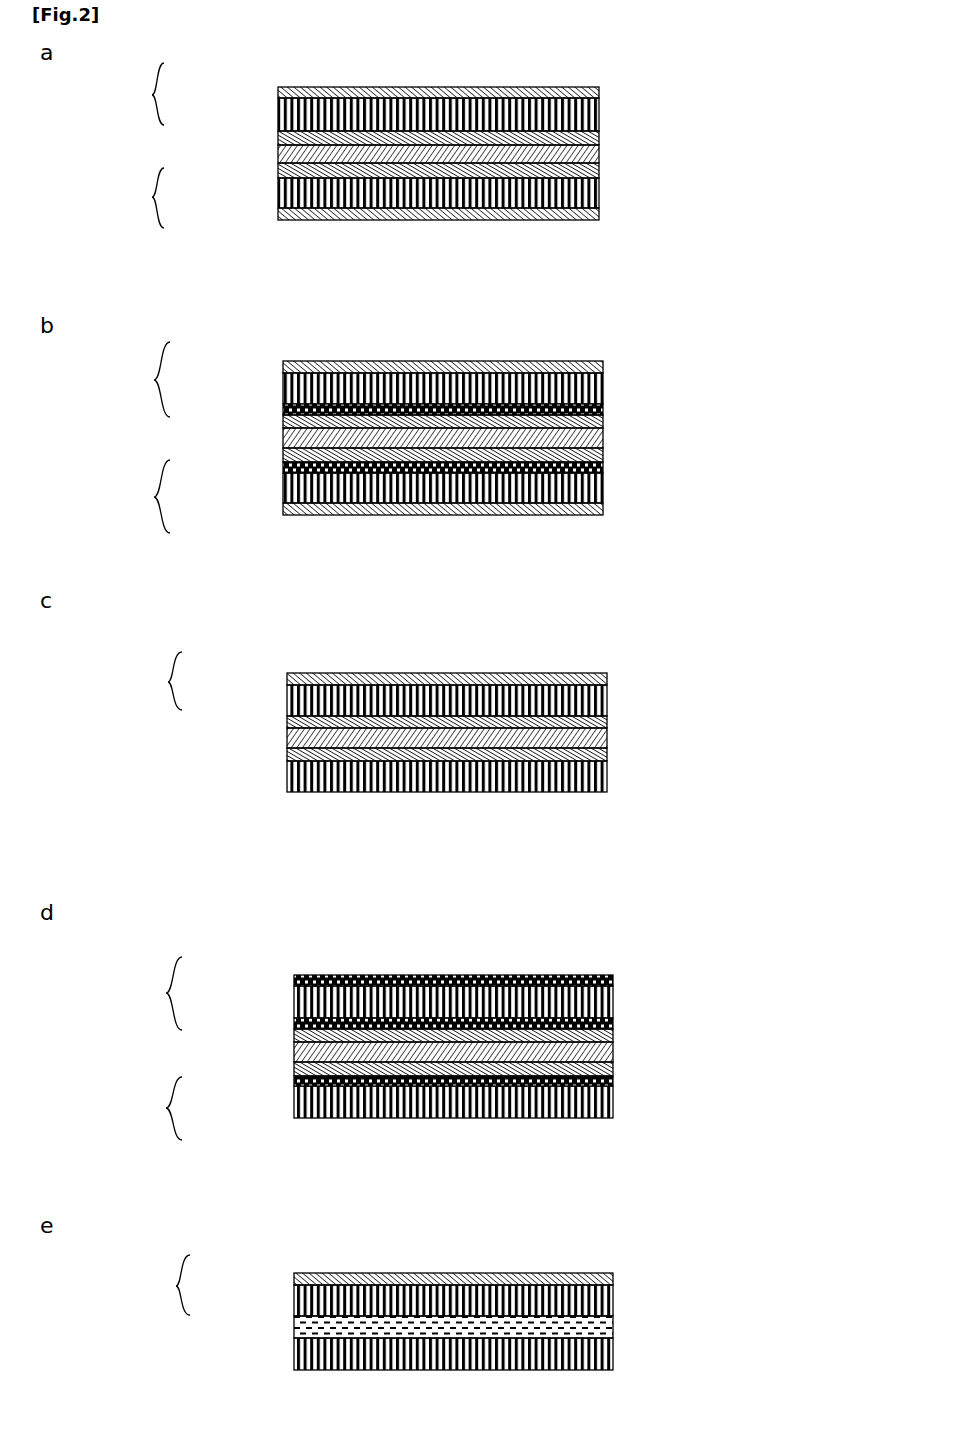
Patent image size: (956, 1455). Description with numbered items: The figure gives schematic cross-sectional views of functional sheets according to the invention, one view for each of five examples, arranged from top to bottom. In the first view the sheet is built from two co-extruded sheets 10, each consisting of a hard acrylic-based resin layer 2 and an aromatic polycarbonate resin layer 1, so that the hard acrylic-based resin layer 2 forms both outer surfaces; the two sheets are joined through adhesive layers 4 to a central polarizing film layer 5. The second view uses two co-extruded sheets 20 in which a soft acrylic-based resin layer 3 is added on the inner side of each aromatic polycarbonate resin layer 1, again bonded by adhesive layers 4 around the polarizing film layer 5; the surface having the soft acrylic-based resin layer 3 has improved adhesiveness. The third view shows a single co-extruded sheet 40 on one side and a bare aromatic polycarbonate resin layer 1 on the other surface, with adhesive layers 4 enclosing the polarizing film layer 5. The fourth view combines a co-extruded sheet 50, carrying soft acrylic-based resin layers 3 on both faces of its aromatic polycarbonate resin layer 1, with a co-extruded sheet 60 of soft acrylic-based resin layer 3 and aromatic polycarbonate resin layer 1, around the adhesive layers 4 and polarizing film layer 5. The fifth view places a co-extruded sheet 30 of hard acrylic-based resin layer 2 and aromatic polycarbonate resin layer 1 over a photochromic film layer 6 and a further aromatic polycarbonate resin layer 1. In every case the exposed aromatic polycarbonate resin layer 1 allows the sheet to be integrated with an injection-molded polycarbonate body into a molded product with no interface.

The aromatic polycarbonate resin layer 1 is at (277, 118).
The hard acrylic-based resin layer 2 is at (277, 96).
The soft acrylic-based resin layer 3 is at (282, 410).
The adhesive layer 4 is at (600, 132).
The polarizing film layer 5 is at (600, 148).
The photochromic film layer 6 is at (614, 1325).
The co-extruded sheet 10 is at (140, 145).
The co-extruded sheet 20 is at (142, 437).
The co-extruded sheet 30 is at (167, 1285).
The co-extruded sheet 40 is at (158, 681).
The co-extruded sheet 50 is at (155, 993).
The co-extruded sheet 60 is at (155, 1108).